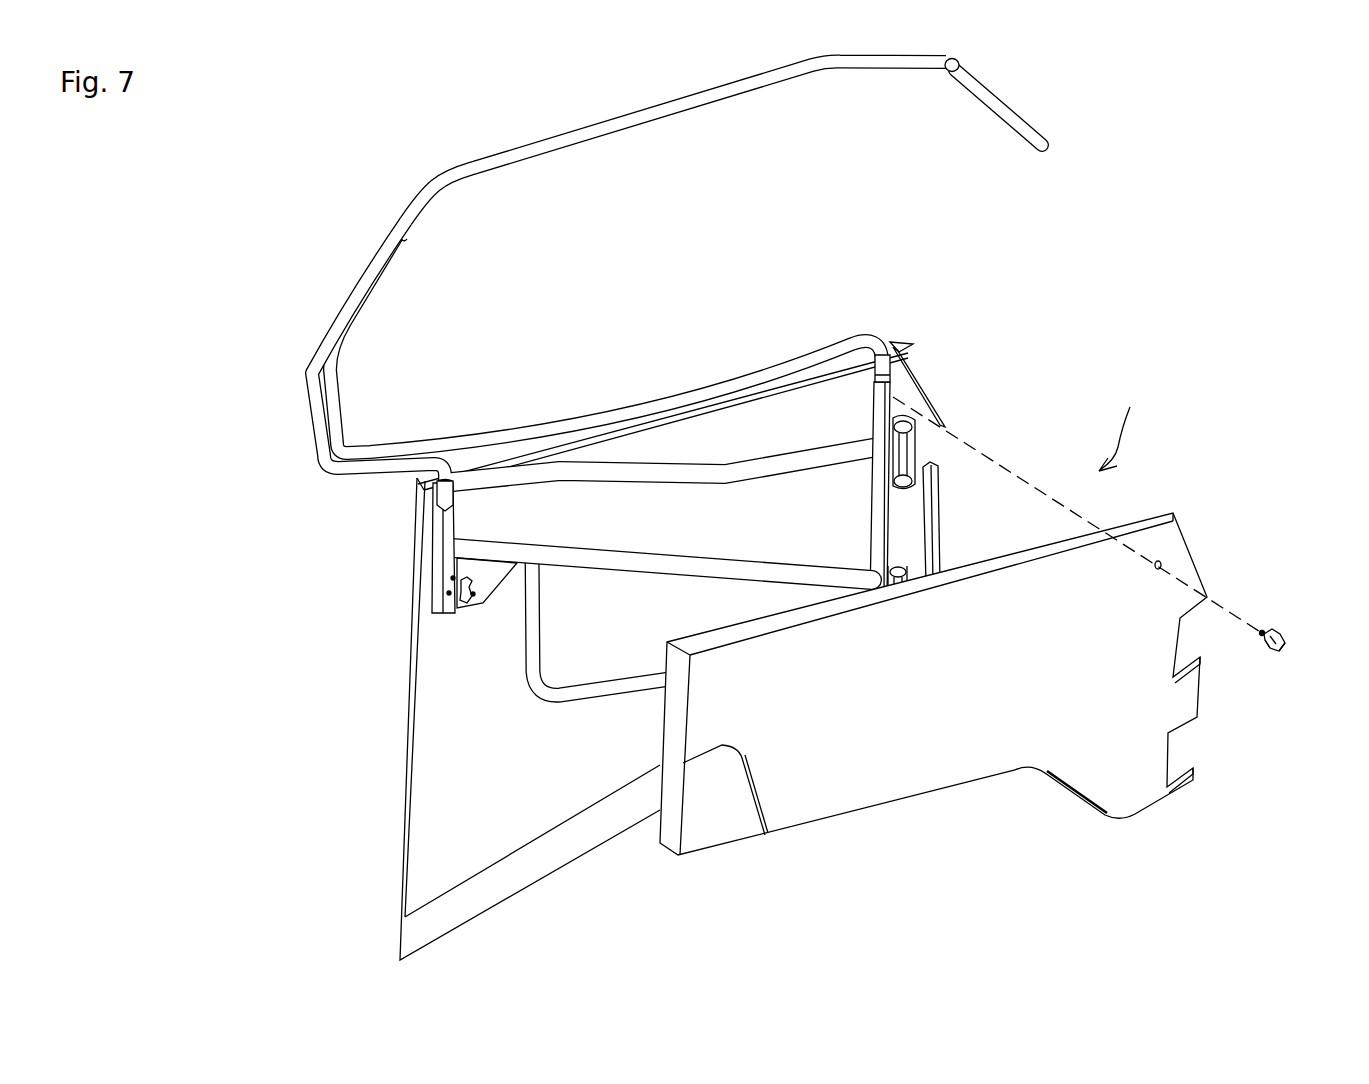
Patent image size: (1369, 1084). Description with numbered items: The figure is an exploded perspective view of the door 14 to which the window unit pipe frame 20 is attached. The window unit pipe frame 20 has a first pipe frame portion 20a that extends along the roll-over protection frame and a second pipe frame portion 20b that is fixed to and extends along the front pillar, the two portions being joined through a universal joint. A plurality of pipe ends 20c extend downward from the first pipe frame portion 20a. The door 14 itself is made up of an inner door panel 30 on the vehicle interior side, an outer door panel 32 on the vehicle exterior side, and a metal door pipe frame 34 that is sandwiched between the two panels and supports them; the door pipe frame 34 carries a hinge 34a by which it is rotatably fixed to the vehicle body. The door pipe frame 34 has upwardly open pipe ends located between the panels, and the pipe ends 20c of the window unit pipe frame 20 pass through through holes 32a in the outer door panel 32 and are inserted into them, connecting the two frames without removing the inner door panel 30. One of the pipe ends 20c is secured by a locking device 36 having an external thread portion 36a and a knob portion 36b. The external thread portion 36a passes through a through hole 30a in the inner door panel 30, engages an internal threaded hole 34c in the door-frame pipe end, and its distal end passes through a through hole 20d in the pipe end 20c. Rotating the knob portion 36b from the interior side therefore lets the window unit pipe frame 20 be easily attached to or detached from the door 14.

The door 14 is at (1148, 395).
The window unit pipe frame 20 is at (689, 264).
The first pipe frame portion 20a is at (646, 110).
The second pipe frame portion 20b is at (1016, 114).
The pipe ends 20c is at (458, 487).
The through hole 20d is at (901, 347).
The inner door panel 30 is at (920, 690).
The through hole 30a is at (1163, 566).
The outer door panel 32 is at (410, 698).
The through holes 32a is at (453, 460).
The door pipe frame 34 is at (701, 503).
The hinge 34a is at (912, 448).
The internal threaded hole 34c is at (980, 384).
The locking device 36 is at (1281, 632).
The external thread portion 36a is at (1264, 645).
The knob portion 36b is at (1284, 648).